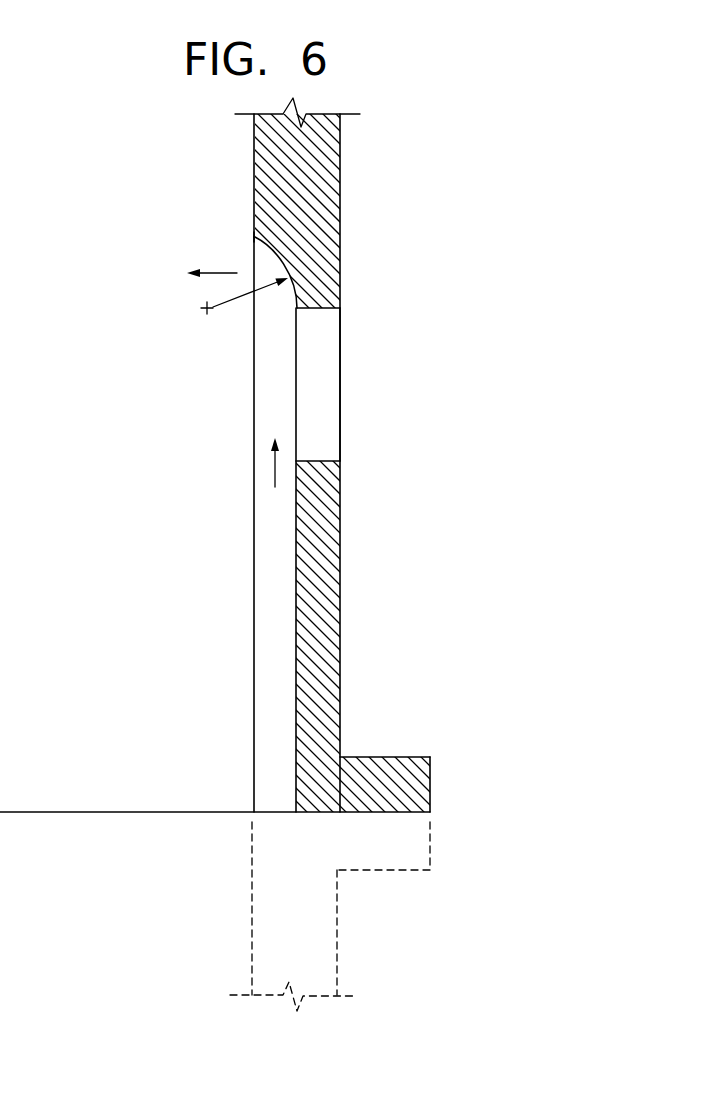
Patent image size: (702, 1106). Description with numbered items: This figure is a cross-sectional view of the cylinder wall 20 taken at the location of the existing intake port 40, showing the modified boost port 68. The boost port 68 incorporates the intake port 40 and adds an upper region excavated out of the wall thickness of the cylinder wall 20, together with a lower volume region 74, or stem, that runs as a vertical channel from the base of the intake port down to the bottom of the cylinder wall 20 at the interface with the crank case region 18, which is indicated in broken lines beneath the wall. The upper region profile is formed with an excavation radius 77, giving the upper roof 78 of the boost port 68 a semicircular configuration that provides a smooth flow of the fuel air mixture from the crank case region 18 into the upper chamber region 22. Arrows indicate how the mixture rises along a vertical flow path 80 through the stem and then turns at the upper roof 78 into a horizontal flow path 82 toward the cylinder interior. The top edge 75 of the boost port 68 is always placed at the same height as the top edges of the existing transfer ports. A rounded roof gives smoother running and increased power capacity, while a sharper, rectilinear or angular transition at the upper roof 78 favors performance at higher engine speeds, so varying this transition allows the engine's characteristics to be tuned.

The crank case region 18 is at (232, 940).
The cylinder wall 20 is at (327, 187).
The upper chamber region 22 is at (238, 160).
The intake port 40 is at (327, 368).
The boost port 68 is at (268, 397).
The lower volume region 74 is at (268, 617).
The top edge 75 is at (255, 238).
The excavation radius 77 is at (238, 303).
The upper roof 78 is at (293, 237).
The vertical flow path 80 is at (275, 476).
The horizontal flow path 82 is at (222, 273).